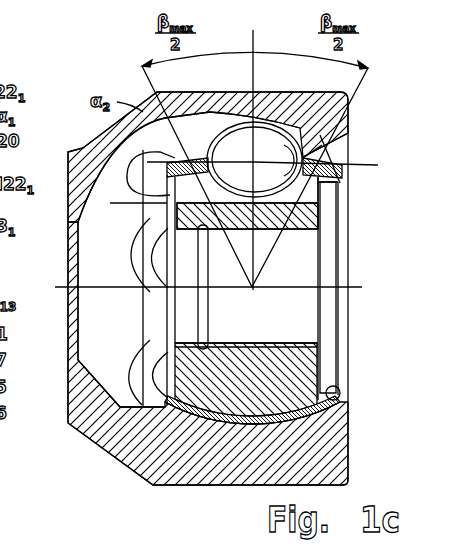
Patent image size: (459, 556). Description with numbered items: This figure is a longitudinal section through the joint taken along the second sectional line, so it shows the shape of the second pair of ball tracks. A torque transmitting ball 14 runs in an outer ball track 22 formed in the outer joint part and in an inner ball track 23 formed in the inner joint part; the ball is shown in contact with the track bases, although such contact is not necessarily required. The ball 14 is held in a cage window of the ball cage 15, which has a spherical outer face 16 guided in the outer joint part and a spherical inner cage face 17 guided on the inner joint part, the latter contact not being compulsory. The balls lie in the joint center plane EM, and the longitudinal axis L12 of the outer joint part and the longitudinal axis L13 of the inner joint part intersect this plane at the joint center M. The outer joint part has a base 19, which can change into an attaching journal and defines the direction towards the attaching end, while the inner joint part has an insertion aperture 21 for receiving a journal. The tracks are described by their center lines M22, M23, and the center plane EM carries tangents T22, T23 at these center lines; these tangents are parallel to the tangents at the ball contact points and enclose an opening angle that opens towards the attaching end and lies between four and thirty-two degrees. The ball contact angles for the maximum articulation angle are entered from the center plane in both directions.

The outer ball track 22 is at (350, 125).
The inner ball track 23 is at (313, 203).
The torque transmitting ball 14 is at (265, 130).
The base 19 is at (68, 232).
The insertion aperture 21 is at (330, 350).
The spherical inner cage face 17 is at (340, 383).
The ball cage 15 is at (342, 393).
The spherical outer face 16 is at (343, 415).
The joint center plane EM is at (258, 34).
The joint center M is at (253, 288).
The longitudinal axis of the outer joint part L12 is at (62, 286).
The longitudinal axis of the inner joint part L13 is at (362, 287).
The center line of the outer ball track M22 is at (110, 132).
The center line of the inner ball track M23 is at (341, 168).
The tangent at the outer track center line T22 is at (340, 183).
The tangent at the inner track center line T23 is at (322, 145).